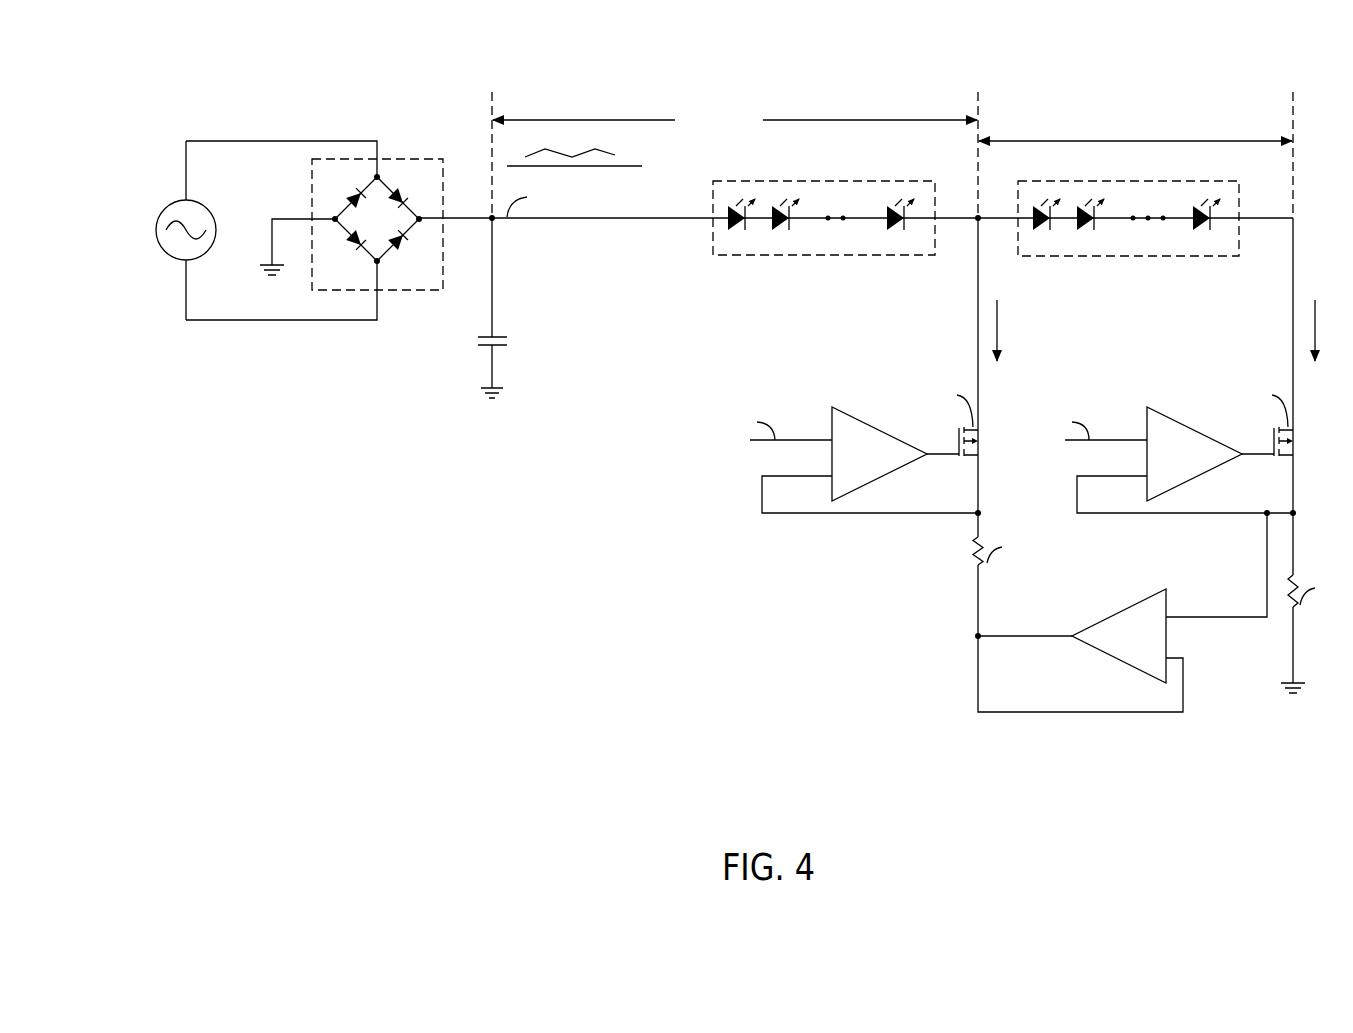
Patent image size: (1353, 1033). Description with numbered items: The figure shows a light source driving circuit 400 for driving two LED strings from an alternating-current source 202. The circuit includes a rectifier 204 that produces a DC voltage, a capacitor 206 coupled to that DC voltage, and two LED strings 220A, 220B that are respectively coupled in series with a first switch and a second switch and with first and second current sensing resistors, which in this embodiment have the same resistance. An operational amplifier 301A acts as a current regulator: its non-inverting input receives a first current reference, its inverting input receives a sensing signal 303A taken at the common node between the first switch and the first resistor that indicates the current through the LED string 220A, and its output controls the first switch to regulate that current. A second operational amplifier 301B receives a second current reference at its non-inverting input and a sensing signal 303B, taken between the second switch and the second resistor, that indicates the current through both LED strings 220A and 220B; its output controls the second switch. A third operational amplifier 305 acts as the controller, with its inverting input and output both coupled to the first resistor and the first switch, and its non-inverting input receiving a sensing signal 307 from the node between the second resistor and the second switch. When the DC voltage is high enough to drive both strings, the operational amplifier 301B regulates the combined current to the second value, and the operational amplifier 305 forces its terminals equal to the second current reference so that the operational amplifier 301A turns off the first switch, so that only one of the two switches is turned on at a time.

The light source driving circuit 400 is at (237, 109).
The AC voltage source 202 is at (167, 203).
The rectifier 204 is at (397, 158).
The capacitor 206 is at (494, 333).
The LED string 220A is at (838, 181).
The LED string 220B is at (1143, 181).
The operational amplifier 301A is at (853, 407).
The operational amplifier 301B is at (1168, 407).
The sensing signal 303A is at (888, 513).
The sensing signal 303B is at (1193, 513).
The operational amplifier 305 is at (1137, 603).
The sensing signal 307 is at (1238, 617).